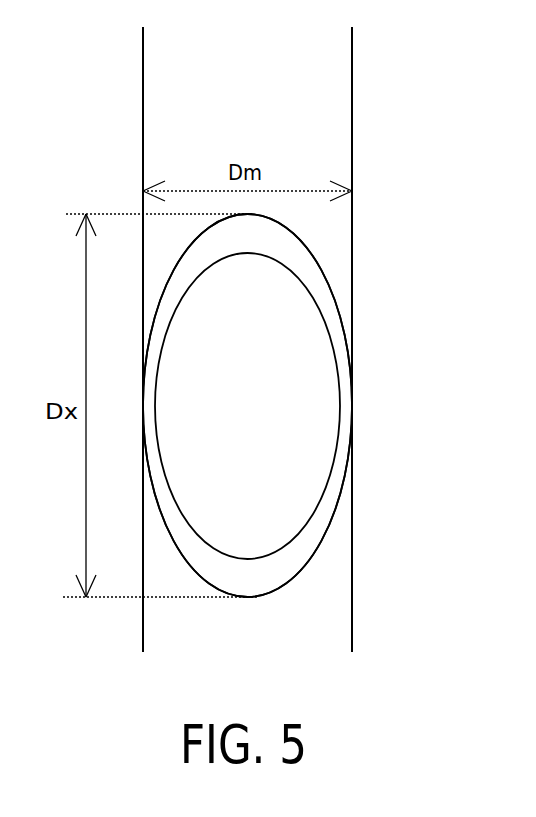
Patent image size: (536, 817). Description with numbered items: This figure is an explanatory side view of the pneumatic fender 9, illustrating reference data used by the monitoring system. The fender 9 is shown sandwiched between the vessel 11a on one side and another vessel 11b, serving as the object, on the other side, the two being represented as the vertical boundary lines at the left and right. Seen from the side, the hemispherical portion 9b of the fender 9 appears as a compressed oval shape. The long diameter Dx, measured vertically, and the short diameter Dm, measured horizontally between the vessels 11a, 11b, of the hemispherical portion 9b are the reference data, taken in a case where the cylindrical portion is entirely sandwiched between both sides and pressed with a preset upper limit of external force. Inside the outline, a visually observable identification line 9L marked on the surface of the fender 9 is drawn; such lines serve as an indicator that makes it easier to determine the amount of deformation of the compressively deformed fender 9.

The vessel 11a is at (133, 160).
The another vessel 11b is at (367, 144).
The pneumatic fender 9 is at (329, 295).
The hemispherical portion 9b is at (308, 415).
The identification line 9L is at (308, 513).